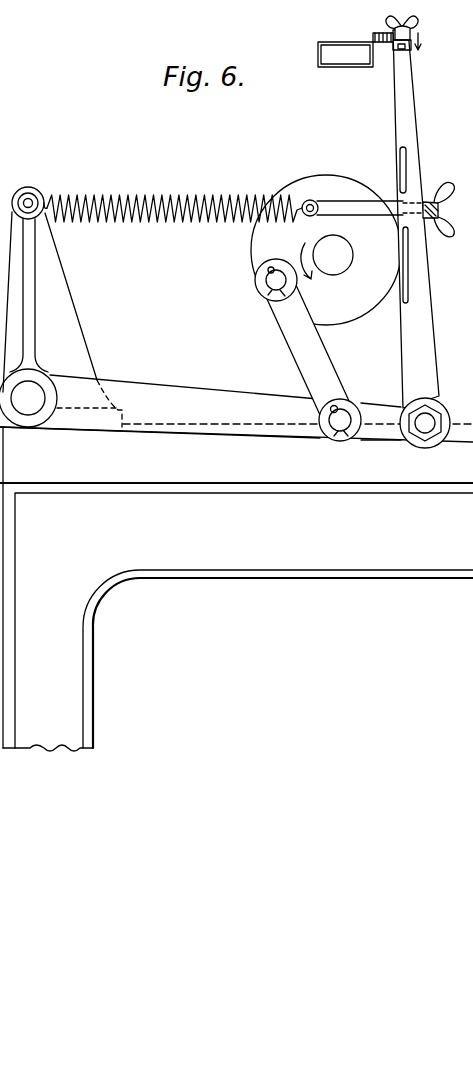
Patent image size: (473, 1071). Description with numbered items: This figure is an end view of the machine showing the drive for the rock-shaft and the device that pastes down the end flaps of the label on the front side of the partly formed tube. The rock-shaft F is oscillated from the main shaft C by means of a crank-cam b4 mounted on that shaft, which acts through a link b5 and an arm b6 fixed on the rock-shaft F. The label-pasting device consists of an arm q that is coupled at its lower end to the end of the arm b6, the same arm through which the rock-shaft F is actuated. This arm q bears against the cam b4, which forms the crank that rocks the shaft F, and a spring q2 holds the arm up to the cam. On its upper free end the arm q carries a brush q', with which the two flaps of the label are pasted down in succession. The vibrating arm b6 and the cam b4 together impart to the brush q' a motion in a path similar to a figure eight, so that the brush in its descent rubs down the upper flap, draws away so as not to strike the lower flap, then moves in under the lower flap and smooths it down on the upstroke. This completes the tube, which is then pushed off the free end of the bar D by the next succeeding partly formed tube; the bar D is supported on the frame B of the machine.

The frame / bed B is at (236, 589).
The crank-cam b4 is at (326, 250).
The link b5 is at (308, 350).
The arm b6 is at (236, 407).
The main shaft C is at (327, 257).
The bar D is at (345, 54).
The rock-shaft F is at (61, 319).
The arm q is at (378, 212).
The brush q' is at (380, 27).
The spring q2 is at (228, 196).